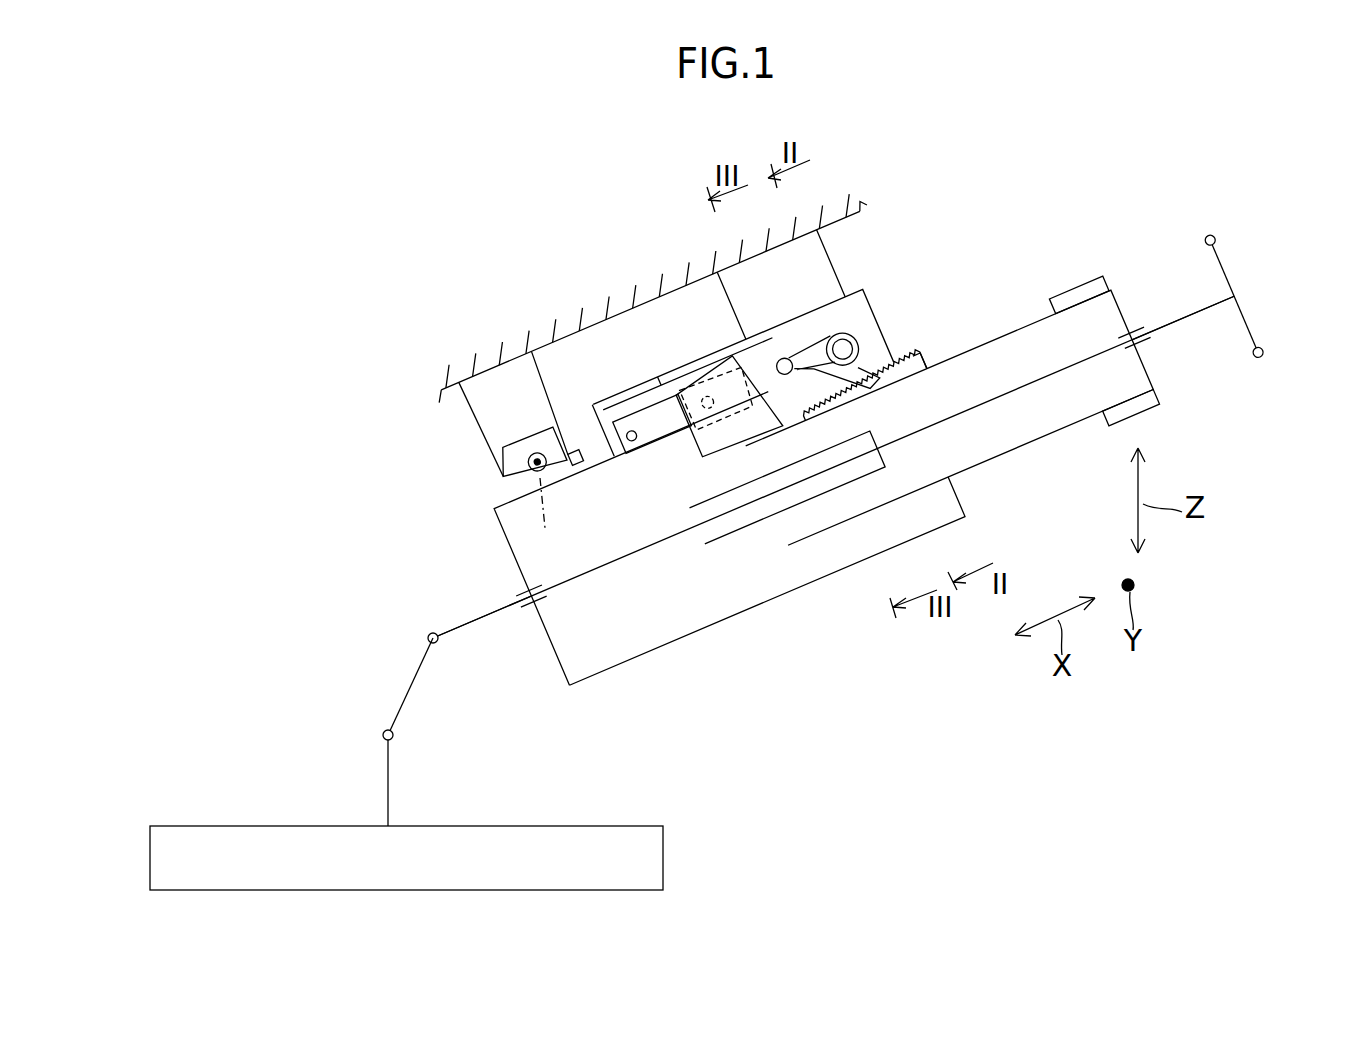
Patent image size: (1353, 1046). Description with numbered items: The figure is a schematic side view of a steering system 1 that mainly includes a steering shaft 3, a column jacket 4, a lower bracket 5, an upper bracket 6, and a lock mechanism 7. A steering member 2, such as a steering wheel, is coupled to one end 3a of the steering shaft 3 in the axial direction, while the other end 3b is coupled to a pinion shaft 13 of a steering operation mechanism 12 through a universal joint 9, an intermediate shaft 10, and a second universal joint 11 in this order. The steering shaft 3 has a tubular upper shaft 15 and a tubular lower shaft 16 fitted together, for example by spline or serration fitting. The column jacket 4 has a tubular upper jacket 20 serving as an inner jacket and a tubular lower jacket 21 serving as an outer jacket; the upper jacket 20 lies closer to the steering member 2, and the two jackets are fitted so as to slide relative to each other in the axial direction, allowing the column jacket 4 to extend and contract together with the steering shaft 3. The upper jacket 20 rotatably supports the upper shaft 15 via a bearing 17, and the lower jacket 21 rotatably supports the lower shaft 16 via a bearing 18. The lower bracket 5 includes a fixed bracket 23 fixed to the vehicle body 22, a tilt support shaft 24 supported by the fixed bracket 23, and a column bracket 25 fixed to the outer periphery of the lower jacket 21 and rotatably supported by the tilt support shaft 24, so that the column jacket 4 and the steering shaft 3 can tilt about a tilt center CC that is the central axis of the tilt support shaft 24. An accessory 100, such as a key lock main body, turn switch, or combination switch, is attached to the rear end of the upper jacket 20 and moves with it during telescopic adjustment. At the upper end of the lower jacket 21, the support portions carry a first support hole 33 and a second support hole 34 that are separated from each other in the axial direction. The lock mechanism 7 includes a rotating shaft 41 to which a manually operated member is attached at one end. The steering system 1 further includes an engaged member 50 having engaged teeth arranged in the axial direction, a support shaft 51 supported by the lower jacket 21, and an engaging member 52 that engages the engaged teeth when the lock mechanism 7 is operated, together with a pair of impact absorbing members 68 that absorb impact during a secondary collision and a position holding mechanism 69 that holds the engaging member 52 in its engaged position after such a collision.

The steering system 1 is at (803, 884).
The steering member 2 is at (1235, 275).
The steering shaft 3 is at (1186, 305).
The end of the steering shaft 3a is at (1227, 318).
The another end of the steering shaft 3b is at (440, 645).
The column jacket 4 is at (1082, 436).
The lower bracket 5 is at (468, 434).
The upper bracket 6 is at (843, 257).
The lock mechanism 7 is at (889, 294).
The universal joint 9 is at (433, 632).
The intermediate shaft 10 is at (410, 690).
The universal joint 11 is at (394, 735).
The steering operation mechanism 12 is at (665, 857).
The pinion shaft 13 is at (390, 786).
The upper shaft 15 is at (1040, 378).
The lower shaft 16 is at (652, 556).
The bearing 17 is at (1130, 333).
The bearing 18 is at (525, 600).
The upper jacket 20 is at (1000, 345).
The lower jacket 21 is at (652, 655).
The vehicle body 22 is at (752, 300).
The fixed bracket 23 is at (528, 380).
The tilt support shaft 24 is at (530, 462).
The column bracket 25 is at (574, 452).
The first support hole 33 is at (786, 360).
The second support hole 34 is at (858, 345).
The rotating shaft 41 is at (883, 378).
The engaged member 50 is at (935, 360).
The support shaft 51 is at (800, 372).
The engaging member 52 is at (797, 395).
The impact absorbing member 68 is at (651, 438).
The position holding mechanism 69 is at (682, 337).
The accessory 100 is at (1079, 286).
The tilt center CC is at (547, 520).